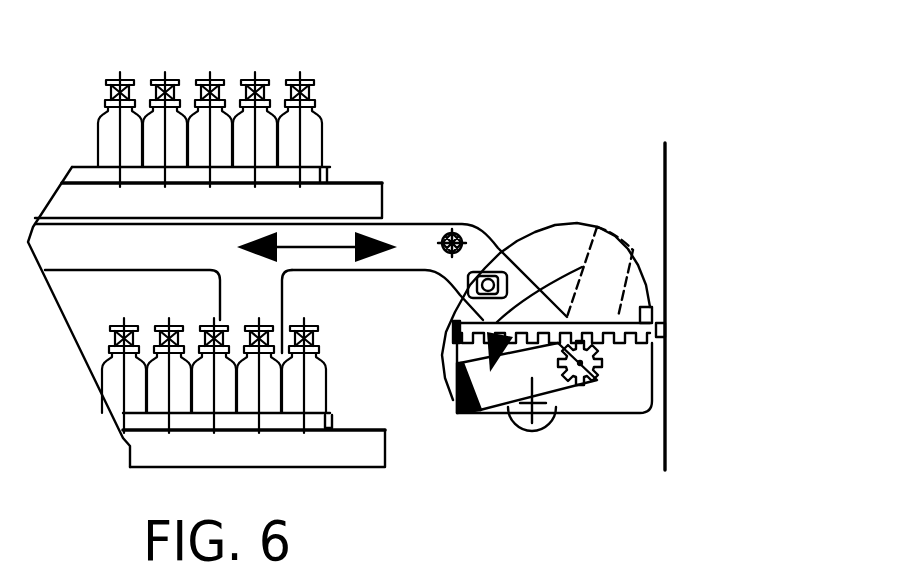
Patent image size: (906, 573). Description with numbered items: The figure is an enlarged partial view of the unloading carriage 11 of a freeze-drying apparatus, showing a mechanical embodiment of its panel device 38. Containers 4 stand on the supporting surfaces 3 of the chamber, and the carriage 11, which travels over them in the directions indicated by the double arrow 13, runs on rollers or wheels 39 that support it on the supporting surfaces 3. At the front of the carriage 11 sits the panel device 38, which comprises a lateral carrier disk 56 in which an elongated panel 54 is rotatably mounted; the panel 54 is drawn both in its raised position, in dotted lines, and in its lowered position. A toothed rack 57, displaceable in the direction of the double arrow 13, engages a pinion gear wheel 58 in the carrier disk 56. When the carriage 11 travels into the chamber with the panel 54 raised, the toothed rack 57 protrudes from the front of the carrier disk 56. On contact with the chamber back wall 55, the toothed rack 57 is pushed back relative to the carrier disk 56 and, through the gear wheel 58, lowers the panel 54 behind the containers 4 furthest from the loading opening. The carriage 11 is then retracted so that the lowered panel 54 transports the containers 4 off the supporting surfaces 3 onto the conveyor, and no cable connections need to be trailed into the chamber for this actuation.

The supporting surface 3 is at (345, 197).
The container 4 is at (260, 123).
The carriage 11 is at (414, 214).
The double arrow 13 is at (318, 248).
The panel device 38 is at (600, 210).
The roller or wheel 39 is at (523, 432).
The panel 54 is at (638, 262).
The back wall 55 is at (670, 398).
The carrier disk 56 is at (630, 403).
The toothed rack 57 is at (652, 320).
The pinion gear wheel 58 is at (583, 377).